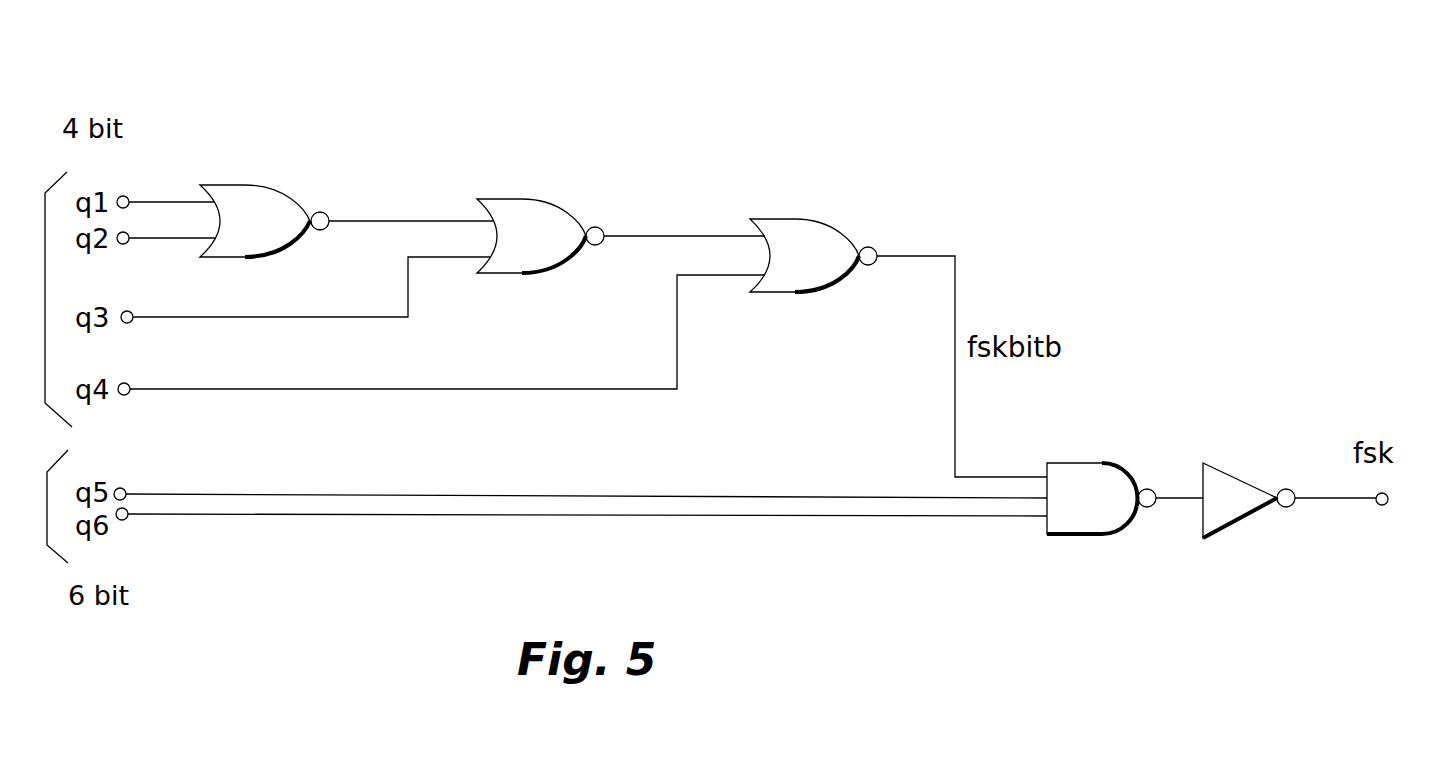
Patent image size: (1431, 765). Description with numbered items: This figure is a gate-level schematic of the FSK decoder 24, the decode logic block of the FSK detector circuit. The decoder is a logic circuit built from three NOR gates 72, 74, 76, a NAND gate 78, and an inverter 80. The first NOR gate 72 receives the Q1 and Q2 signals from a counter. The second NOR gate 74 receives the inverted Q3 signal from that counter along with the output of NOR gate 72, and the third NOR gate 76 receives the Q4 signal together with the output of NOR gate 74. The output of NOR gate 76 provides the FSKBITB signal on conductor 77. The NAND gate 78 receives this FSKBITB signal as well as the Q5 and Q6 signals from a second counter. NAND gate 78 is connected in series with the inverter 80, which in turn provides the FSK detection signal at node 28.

The FSK decoder 24 is at (337, 102).
The NOR gate 72 is at (330, 143).
The NOR gate 74 is at (558, 201).
The NOR gate 76 is at (833, 221).
The conductor 77 is at (957, 284).
The NAND gate 78 is at (1102, 535).
The inverter 80 is at (1242, 520).
The node 28 is at (1382, 505).